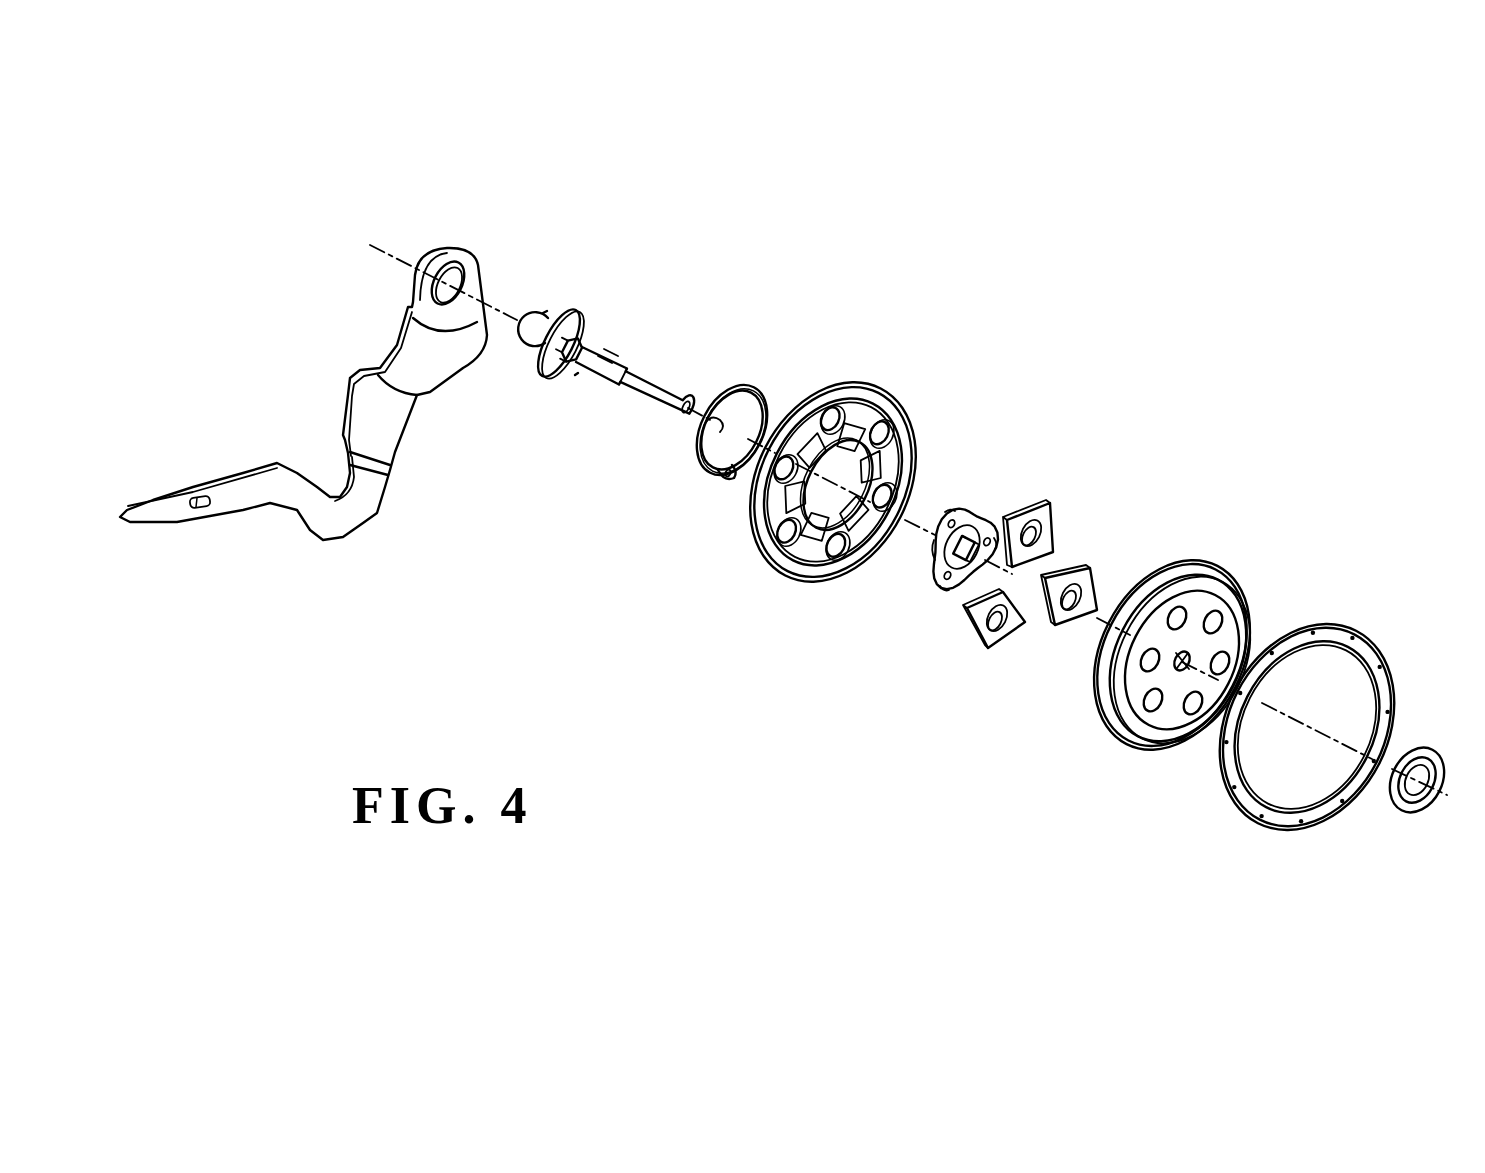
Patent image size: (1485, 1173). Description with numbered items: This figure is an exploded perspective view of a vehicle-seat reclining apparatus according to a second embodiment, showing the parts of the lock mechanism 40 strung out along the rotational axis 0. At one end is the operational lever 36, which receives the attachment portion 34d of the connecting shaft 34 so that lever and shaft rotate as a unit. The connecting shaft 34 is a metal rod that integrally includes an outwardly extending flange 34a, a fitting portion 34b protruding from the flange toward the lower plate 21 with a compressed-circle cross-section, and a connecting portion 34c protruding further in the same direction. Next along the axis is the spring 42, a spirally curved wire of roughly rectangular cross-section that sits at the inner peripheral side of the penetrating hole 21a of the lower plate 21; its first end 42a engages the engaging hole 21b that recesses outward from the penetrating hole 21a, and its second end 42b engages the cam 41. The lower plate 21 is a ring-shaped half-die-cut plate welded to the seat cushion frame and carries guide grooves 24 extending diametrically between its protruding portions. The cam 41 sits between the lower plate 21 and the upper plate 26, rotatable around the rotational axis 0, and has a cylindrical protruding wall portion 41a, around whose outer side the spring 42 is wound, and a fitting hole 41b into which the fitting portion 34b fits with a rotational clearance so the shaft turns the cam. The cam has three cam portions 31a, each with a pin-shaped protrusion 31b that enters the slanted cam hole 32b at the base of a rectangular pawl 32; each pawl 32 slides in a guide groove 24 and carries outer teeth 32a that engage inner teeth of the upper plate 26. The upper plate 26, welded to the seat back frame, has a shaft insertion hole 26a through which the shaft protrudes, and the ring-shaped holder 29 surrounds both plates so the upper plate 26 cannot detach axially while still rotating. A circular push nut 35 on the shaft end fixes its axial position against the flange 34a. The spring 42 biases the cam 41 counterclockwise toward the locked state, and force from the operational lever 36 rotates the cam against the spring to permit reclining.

The rotational axis 0 is at (480, 313).
The operational lever 36 is at (407, 355).
The connecting shaft 34 is at (592, 354).
The flange 34a is at (580, 325).
The fitting portion 34b is at (555, 372).
The connecting portion 34c is at (607, 378).
The attachment portion 34d is at (523, 343).
The spring 42 is at (713, 442).
The first end 42a is at (723, 480).
The second end 42b is at (728, 391).
The lower plate 21 is at (823, 482).
The penetrating hole 21a is at (782, 566).
The engaging hole 21b is at (843, 578).
The guide groove 24 is at (820, 401).
The cam 41 is at (946, 568).
The protruding wall portion 41a is at (932, 556).
The fitting hole 41b is at (988, 535).
The cam portions 31a is at (963, 505).
The protrusion 31b is at (951, 520).
The pawl 32 is at (1057, 582).
The outer teeth 32a is at (1043, 505).
The cam hole 32b is at (1012, 618).
The upper plate 26 is at (1171, 649).
The shaft insertion hole 26a is at (1170, 670).
The holder 29 is at (1340, 630).
The push nut 35 is at (1417, 749).
The lock mechanism 40 is at (1001, 374).